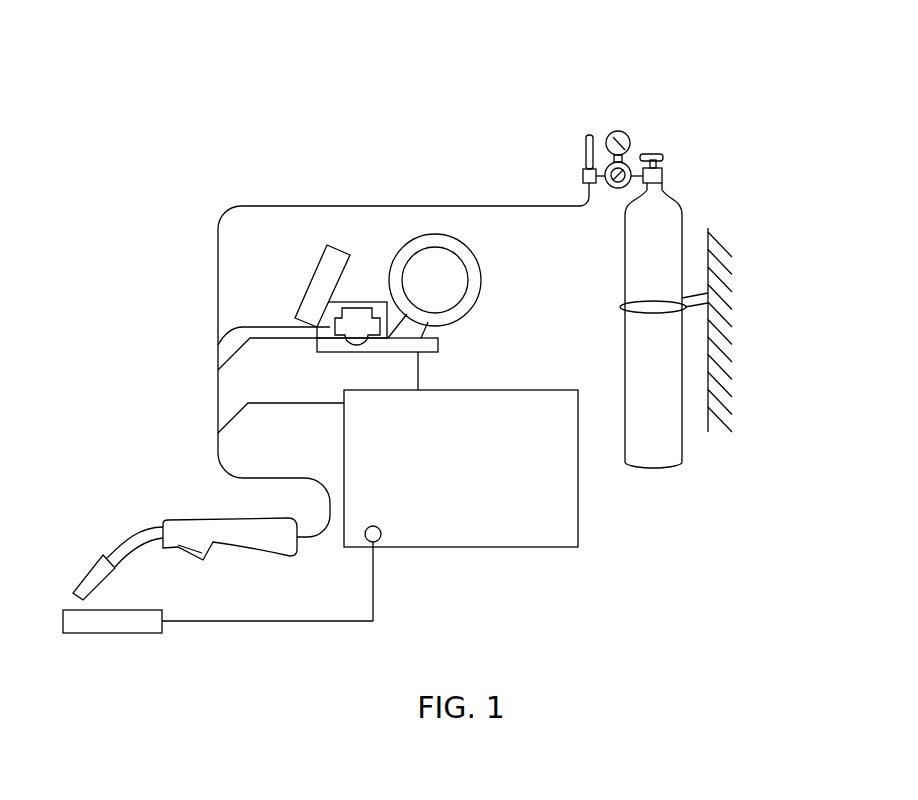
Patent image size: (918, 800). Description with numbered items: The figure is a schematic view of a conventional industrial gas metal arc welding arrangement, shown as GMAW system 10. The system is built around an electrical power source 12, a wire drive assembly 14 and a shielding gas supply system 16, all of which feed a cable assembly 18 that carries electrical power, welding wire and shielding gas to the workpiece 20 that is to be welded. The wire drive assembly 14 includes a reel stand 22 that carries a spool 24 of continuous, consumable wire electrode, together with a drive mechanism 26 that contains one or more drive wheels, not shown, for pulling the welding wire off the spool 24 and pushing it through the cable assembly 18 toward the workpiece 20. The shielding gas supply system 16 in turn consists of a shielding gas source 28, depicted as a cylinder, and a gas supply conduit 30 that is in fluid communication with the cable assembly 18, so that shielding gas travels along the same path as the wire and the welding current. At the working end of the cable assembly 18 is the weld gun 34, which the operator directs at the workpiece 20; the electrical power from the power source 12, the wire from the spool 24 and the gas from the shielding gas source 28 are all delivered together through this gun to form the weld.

The GMAW system 10 is at (272, 90).
The electrical power source 12 is at (461, 505).
The wire drive assembly 14 is at (510, 256).
The shielding gas supply system 16 is at (703, 168).
The cable assembly 18 is at (200, 448).
The workpiece 20 is at (120, 624).
The reel stand 22 is at (448, 288).
The spool 24 is at (437, 238).
The drive mechanism 26 is at (320, 228).
The shielding gas source 28 is at (670, 455).
The gas supply conduit 30 is at (242, 204).
The weld gun 34 is at (173, 516).